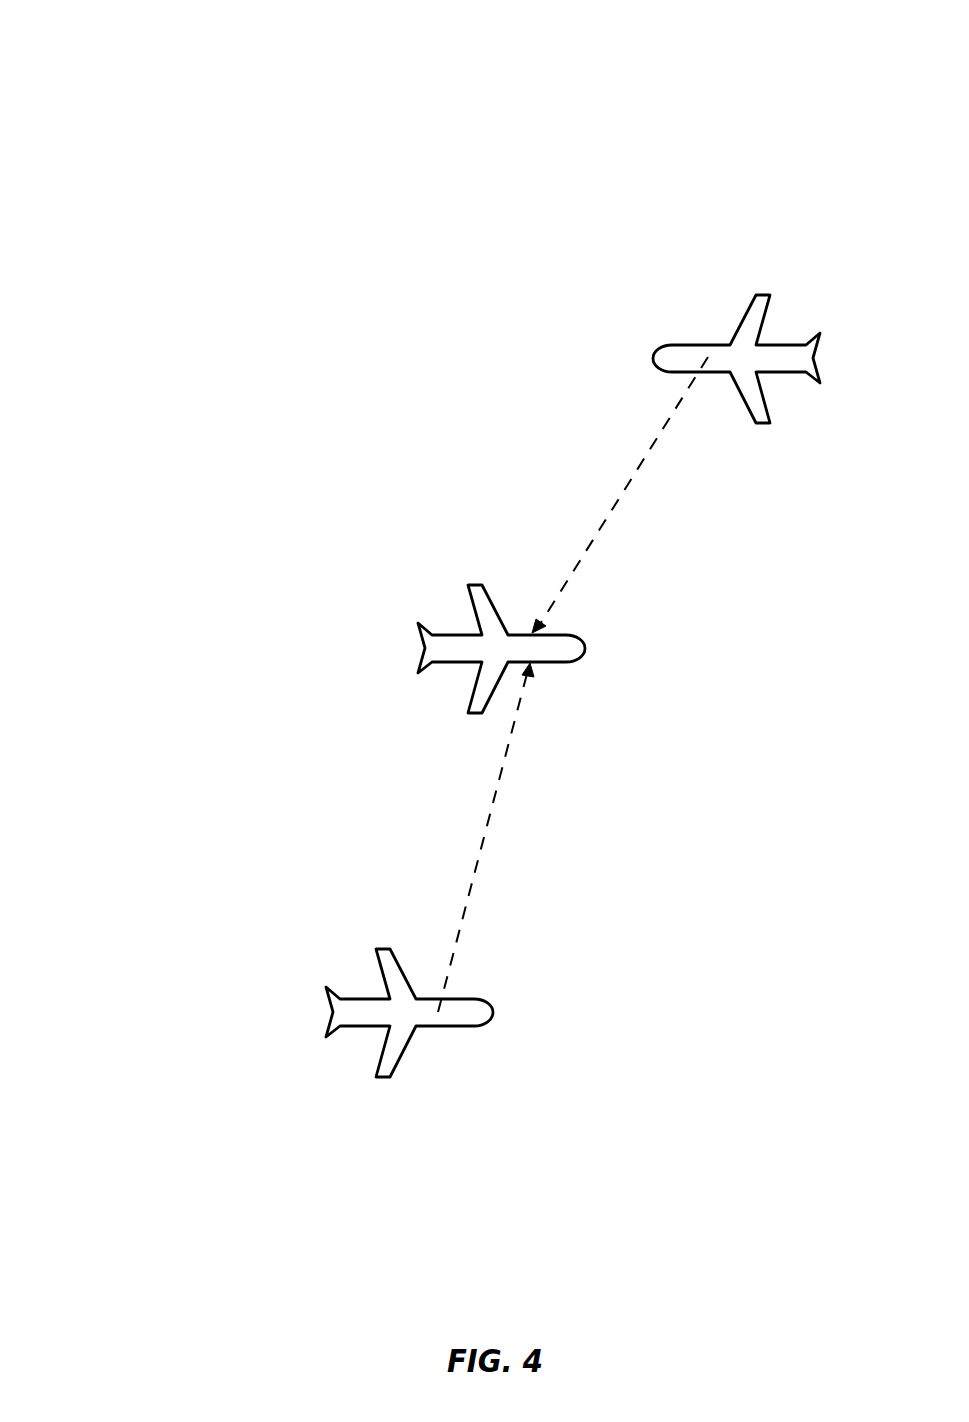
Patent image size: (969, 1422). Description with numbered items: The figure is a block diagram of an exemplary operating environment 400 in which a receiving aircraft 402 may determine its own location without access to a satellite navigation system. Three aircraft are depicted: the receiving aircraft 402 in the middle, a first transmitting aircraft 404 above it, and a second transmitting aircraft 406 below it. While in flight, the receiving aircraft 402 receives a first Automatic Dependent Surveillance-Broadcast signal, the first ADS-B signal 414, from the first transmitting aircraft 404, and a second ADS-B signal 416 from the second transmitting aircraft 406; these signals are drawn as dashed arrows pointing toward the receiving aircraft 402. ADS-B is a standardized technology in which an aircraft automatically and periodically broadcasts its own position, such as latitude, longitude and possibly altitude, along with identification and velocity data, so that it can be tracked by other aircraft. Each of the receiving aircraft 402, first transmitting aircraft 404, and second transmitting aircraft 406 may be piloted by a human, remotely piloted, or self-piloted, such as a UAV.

The operating environment 400 is at (107, 137).
The receiving aircraft 402 is at (445, 634).
The first transmitting aircraft 404 is at (680, 347).
The second transmitting aircraft 406 is at (353, 997).
The first ADS-B signal 414 is at (628, 488).
The second ADS-B signal 416 is at (477, 868).